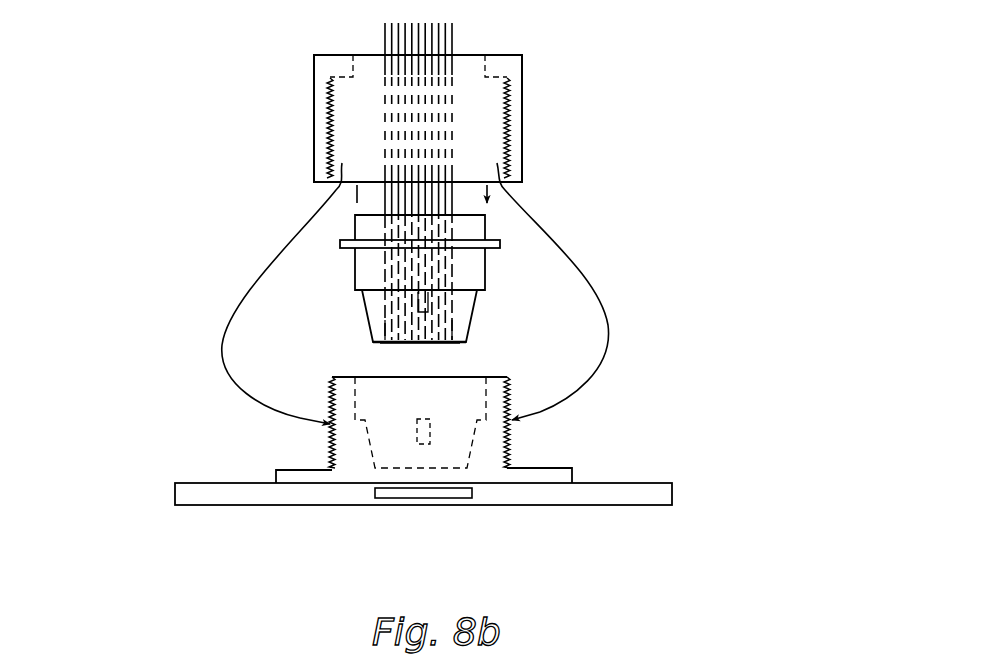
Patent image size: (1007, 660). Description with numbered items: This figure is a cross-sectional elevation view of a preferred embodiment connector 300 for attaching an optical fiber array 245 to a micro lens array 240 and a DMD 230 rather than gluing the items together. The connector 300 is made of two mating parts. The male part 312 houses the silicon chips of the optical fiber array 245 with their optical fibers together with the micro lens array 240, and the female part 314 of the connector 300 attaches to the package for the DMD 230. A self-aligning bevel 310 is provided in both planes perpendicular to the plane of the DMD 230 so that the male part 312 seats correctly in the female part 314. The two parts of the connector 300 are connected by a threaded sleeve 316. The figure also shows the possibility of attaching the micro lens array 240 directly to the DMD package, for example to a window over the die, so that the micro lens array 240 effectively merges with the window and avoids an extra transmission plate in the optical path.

The threaded sleeve 316 is at (526, 94).
The male part 312 is at (496, 273).
The self-aligning bevel 310 is at (481, 308).
The optical fiber array 245 is at (458, 322).
The micro lens array 240 is at (455, 345).
The female part 314 is at (516, 448).
The DMD 230 is at (399, 506).
The connector 300 is at (682, 292).